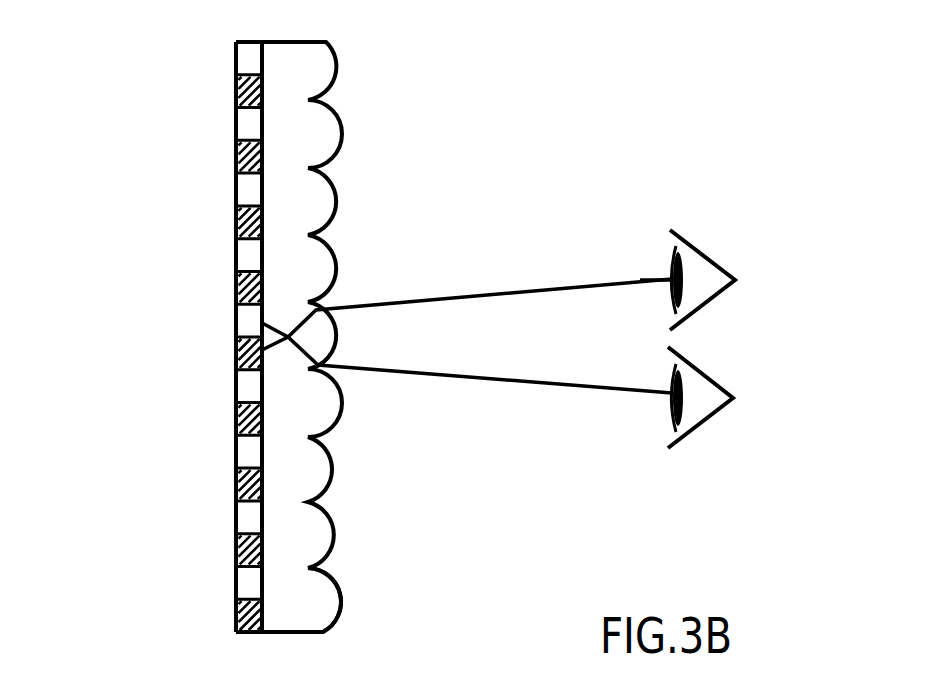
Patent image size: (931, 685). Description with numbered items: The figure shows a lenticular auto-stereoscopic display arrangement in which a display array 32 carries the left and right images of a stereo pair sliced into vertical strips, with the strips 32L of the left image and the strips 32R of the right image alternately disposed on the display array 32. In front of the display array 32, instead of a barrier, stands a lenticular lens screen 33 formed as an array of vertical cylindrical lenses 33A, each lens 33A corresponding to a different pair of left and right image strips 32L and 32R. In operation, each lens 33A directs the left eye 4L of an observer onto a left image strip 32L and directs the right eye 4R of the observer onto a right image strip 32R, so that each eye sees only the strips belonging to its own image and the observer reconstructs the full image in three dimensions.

The display array 32 is at (200, 479).
The strips of the left image 32L is at (243, 583).
The strips of the right image 32R is at (243, 622).
The lenticular lens screen 33 is at (339, 463).
The vertical cylindrical lens 33A is at (303, 601).
The right eye 4R is at (698, 253).
The left eye 4L is at (700, 418).